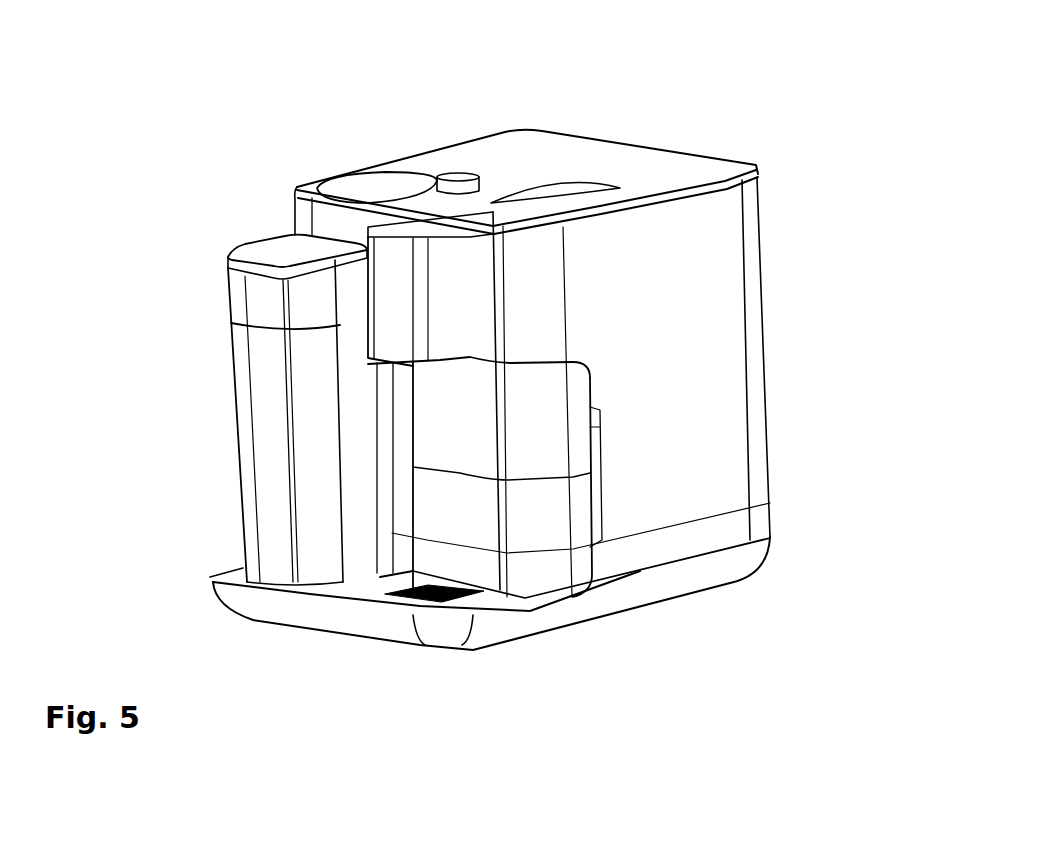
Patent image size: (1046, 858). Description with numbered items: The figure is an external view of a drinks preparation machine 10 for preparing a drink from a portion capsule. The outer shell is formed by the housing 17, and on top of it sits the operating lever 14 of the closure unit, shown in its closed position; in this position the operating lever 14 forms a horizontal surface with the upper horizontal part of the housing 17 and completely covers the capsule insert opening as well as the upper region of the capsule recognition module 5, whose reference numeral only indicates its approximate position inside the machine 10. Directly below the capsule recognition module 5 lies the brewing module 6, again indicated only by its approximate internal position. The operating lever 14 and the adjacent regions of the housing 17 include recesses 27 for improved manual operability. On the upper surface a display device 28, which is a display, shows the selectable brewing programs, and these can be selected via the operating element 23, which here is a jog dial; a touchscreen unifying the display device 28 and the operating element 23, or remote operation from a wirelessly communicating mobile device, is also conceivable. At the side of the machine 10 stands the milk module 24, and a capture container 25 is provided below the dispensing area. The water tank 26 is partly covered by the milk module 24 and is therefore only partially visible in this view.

The drinks preparation machine 10 is at (748, 106).
The capsule recognition module 5 is at (593, 243).
The brewing module 6 is at (538, 260).
The operating lever 14 is at (492, 206).
The housing 17 is at (668, 173).
The operating element 23 is at (452, 176).
The milk module 24 is at (270, 430).
The capture container 25 is at (550, 423).
The water tank 26 is at (396, 449).
The recesses 27 is at (367, 229).
The display device 28 is at (385, 183).